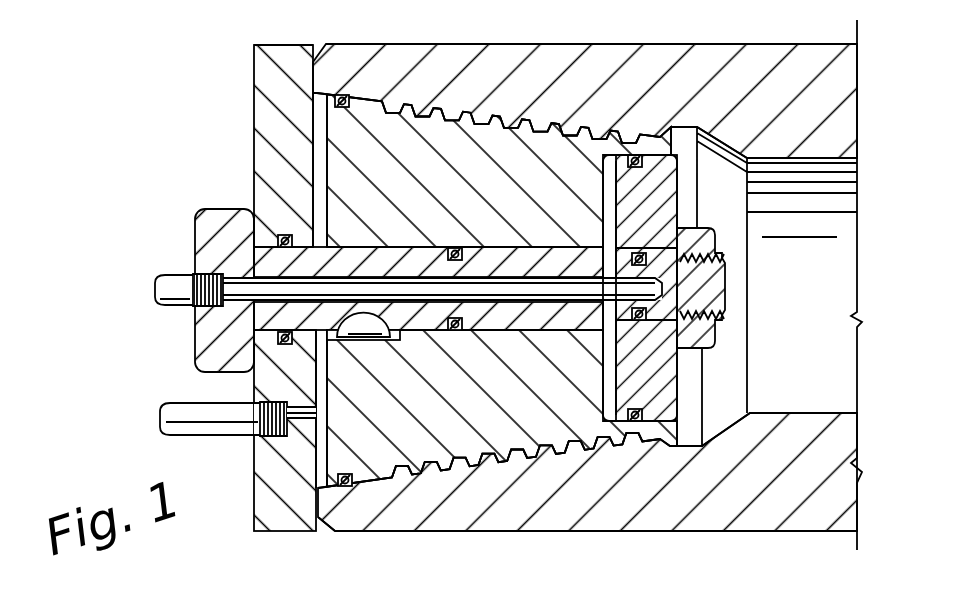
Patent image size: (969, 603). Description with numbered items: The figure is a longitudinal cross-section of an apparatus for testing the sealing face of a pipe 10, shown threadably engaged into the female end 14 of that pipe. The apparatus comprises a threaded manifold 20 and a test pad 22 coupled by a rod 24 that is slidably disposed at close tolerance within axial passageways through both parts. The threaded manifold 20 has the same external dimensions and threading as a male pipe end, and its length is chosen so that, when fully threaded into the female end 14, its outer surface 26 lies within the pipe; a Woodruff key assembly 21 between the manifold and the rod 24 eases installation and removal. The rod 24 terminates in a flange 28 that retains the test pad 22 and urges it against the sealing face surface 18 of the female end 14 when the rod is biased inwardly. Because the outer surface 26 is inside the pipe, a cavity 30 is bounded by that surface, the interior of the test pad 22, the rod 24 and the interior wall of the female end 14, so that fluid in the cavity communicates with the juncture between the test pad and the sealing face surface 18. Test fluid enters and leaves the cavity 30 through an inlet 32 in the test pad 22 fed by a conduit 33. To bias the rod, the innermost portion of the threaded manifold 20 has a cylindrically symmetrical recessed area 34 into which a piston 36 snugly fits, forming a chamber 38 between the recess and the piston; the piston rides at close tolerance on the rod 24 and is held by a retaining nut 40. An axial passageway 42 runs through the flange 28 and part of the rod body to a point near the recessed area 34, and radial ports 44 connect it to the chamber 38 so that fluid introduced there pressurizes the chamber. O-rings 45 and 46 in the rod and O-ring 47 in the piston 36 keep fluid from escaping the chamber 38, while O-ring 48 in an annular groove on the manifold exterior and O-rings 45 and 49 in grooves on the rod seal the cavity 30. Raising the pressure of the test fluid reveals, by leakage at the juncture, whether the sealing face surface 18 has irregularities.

The pipe 10 is at (525, 513).
The female end 14 is at (370, 512).
The sealing face surface 18 is at (313, 72).
The threaded manifold 20 is at (441, 437).
The Woodruff key assembly 21 is at (363, 326).
The test pad 22 is at (296, 44).
The rod 24 is at (493, 247).
The outer surface 26 is at (313, 138).
The flange 28 is at (225, 209).
The cavity 30 is at (322, 167).
The inlet 32 is at (305, 420).
The conduit 33 is at (170, 413).
The recessed area 34 is at (612, 193).
The piston 36 is at (678, 393).
The chamber 38 is at (603, 165).
The retaining nut 40 is at (710, 345).
The axial passageway 42 is at (250, 288).
The radial ports 44 is at (606, 246).
The O-ring 45 is at (452, 247).
The O-ring 46 is at (641, 322).
The O-ring 47 is at (640, 168).
The O-ring 48 is at (340, 110).
The O-ring 49 is at (290, 345).